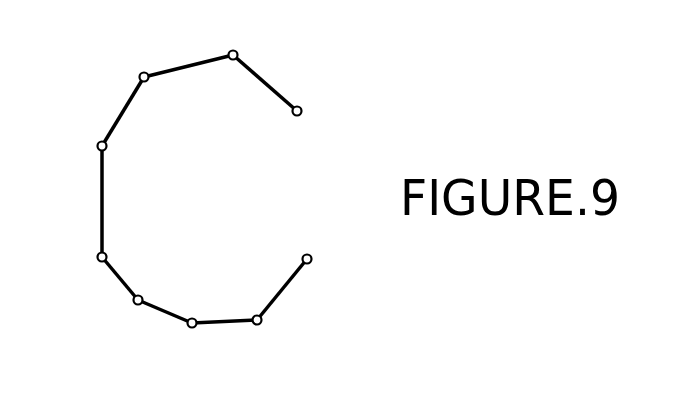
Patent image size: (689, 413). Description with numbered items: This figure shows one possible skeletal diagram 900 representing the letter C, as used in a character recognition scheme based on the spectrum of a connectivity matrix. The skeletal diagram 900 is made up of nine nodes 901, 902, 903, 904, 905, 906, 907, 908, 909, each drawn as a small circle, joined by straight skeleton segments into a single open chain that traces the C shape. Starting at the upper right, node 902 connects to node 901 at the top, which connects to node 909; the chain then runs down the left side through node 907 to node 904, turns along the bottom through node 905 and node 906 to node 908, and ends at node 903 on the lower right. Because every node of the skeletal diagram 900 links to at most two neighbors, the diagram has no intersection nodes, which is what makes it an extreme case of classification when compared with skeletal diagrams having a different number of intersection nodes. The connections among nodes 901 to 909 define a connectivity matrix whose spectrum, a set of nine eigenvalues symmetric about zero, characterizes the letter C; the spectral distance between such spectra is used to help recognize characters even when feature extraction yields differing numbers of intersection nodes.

The skeletal diagram 900 is at (403, 302).
The node 901 is at (236, 50).
The node 902 is at (301, 108).
The node 903 is at (311, 263).
The node 904 is at (98, 257).
The node 905 is at (134, 304).
The node 906 is at (191, 328).
The node 907 is at (98, 146).
The node 908 is at (261, 323).
The node 909 is at (141, 73).